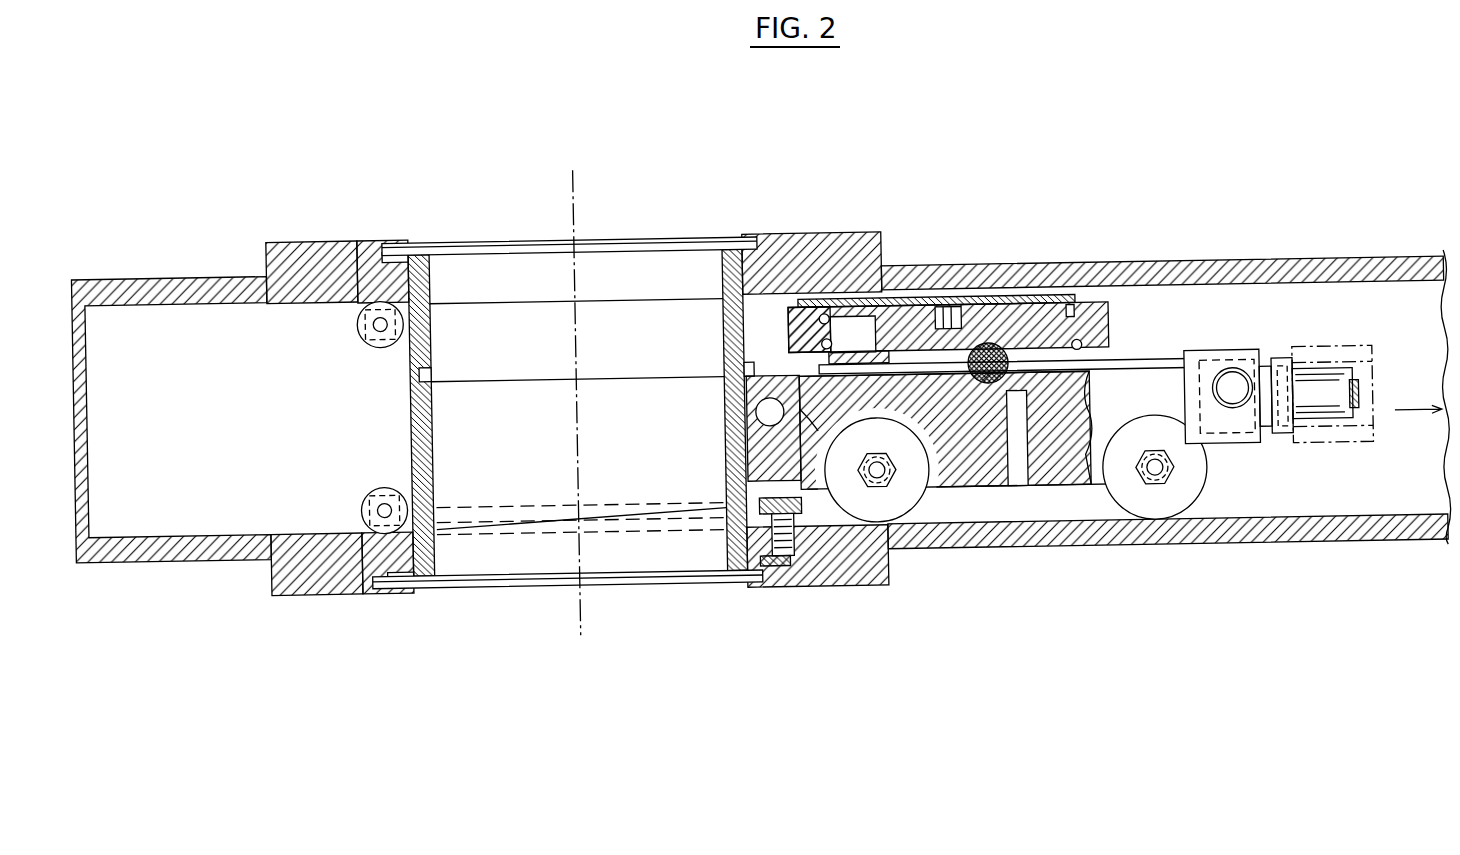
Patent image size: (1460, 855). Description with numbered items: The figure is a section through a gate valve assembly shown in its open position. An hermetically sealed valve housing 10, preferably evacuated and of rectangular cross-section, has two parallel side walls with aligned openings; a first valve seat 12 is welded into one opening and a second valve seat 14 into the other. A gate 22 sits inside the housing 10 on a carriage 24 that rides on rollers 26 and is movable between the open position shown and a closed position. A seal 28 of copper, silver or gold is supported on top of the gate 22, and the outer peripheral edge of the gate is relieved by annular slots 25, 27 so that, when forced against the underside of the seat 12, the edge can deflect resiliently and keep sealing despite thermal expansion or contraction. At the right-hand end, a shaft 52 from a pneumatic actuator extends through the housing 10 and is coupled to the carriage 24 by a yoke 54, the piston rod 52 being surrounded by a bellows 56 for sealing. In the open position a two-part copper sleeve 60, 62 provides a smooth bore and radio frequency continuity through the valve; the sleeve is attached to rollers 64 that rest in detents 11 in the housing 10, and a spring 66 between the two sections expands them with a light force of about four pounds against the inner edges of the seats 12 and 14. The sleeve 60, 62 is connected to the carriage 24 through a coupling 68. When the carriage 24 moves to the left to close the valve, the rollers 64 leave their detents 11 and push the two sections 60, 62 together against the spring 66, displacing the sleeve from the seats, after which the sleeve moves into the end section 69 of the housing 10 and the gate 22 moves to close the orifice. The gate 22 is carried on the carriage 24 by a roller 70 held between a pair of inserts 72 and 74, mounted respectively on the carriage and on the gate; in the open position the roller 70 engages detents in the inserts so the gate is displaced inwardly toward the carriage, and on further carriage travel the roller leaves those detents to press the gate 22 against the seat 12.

The valve housing 10 is at (150, 274).
The detents 11 is at (360, 236).
The first valve seat 12 is at (430, 266).
The second valve seat 14 is at (727, 549).
The gate 22 is at (1112, 328).
The carriage 24 is at (1075, 470).
The annular slot 25 is at (823, 345).
The rollers 26 is at (910, 487).
The annular slot 27 is at (821, 320).
The seal 28 is at (1035, 301).
The shaft 52 is at (1305, 410).
The yoke 54 is at (1240, 428).
The bellows 56 is at (1353, 445).
The copper sleeve section 60 is at (497, 333).
The copper sleeve section 62 is at (488, 465).
The rollers 64 is at (360, 322).
The spring 66 is at (410, 363).
The coupling 68 is at (745, 455).
The end section 69 is at (145, 388).
The roller 70 is at (990, 349).
The insert 72 is at (902, 338).
The insert 74 is at (968, 410).